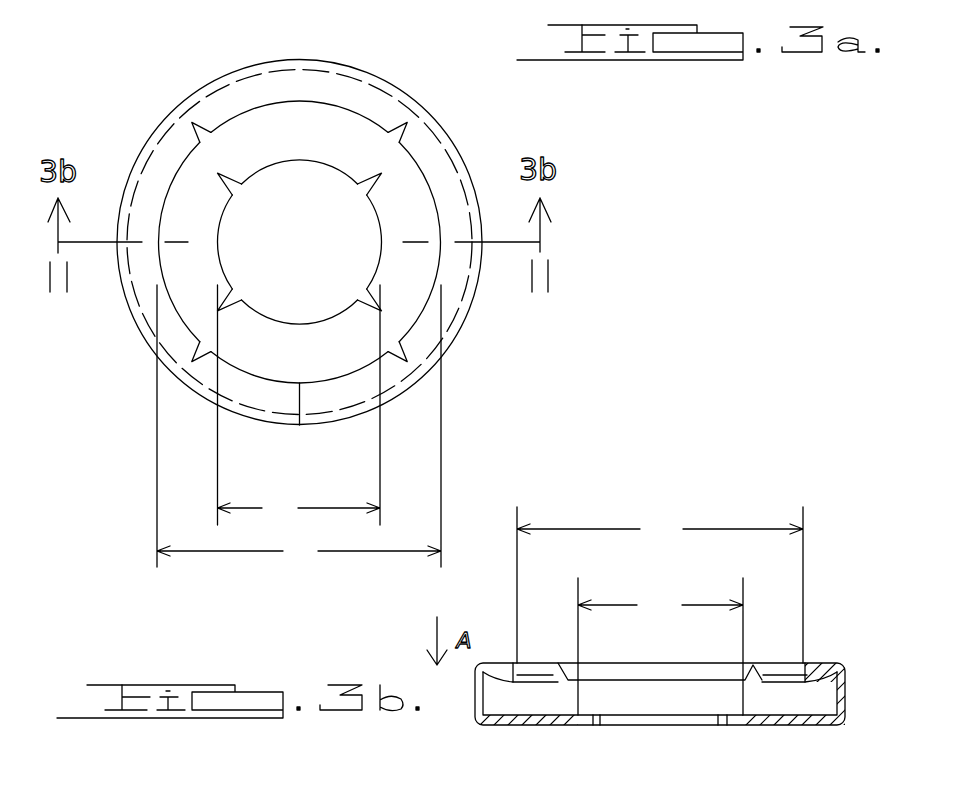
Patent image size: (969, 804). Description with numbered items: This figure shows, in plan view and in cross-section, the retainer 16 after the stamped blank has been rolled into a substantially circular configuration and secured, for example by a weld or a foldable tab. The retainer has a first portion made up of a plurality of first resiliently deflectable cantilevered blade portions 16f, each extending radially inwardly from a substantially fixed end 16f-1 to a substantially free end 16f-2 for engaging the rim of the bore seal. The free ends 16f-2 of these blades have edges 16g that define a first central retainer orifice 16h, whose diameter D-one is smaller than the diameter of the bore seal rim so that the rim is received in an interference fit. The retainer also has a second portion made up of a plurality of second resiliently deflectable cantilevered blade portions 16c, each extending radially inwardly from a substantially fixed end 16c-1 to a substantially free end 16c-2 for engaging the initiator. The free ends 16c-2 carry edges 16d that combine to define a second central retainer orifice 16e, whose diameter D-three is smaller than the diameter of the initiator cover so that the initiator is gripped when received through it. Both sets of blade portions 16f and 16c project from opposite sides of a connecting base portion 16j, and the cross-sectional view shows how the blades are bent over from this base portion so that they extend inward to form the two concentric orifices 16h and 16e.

In FIG. 3a, the retainer 16 is at (139, 354).
In FIG. 3a, the second resiliently deflectable cantilevered blade portions 16c is at (266, 121).
In FIG. 3b, the second resiliently deflectable cantilevered blade portions 16c is at (540, 718).
In FIG. 3a, the substantially fixed end 16c-1 is at (290, 115).
In FIG. 3a, the substantially free end 16c-2 is at (252, 174).
In FIG. 3a, the edges 16d is at (295, 163).
In FIG. 3b, the edges 16d is at (587, 725).
In FIG. 3a, the second central retainer orifice 16e is at (240, 508).
In FIG. 3b, the second central retainer orifice 16e is at (600, 607).
In FIG. 3a, the first resiliently deflectable cantilevered blade portions 16f is at (368, 102).
In FIG. 3a, the substantially fixed end 16f-1 is at (438, 152).
In FIG. 3b, the substantially fixed end 16f-1 is at (813, 663).
In FIG. 3a, the substantially free end 16f-2 is at (430, 323).
In FIG. 3b, the substantially free end 16f-2 is at (783, 667).
In FIG. 3a, the edges 16g is at (337, 372).
In FIG. 3b, the edges 16g is at (712, 683).
In FIG. 3a, the first central retainer orifice 16h is at (195, 547).
In FIG. 3b, the first central retainer orifice 16h is at (603, 528).
In FIG. 3b, the connecting base portion 16j is at (847, 690).